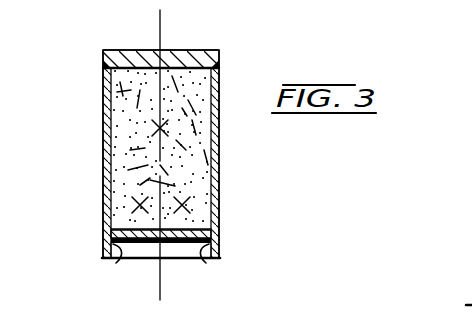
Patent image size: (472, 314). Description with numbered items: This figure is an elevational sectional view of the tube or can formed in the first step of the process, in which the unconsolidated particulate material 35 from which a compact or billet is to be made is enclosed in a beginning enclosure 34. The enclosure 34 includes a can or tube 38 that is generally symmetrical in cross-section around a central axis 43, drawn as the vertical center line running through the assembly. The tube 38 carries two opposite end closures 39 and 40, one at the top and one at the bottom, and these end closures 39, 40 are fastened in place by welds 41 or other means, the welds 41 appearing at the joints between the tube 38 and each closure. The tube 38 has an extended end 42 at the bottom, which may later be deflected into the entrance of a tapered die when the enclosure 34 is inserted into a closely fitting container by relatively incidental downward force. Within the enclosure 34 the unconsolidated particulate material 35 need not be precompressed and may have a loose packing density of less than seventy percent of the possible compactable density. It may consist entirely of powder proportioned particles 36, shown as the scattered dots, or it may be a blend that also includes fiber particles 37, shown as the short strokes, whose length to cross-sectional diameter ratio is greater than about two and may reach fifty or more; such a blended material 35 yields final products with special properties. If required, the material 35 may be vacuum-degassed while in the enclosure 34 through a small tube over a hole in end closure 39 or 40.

The beginning enclosure 34 is at (243, 170).
The unconsolidated particulate material 35 is at (121, 200).
The powder proportioned particles 36 is at (121, 125).
The fiber particles 37 is at (137, 157).
The can or tube 38 is at (216, 210).
The end closure 39 is at (140, 62).
The end closure 40 is at (178, 244).
The welds 41 is at (108, 63).
The extended end of the tube 42 is at (216, 242).
The central axis 43 is at (161, 23).